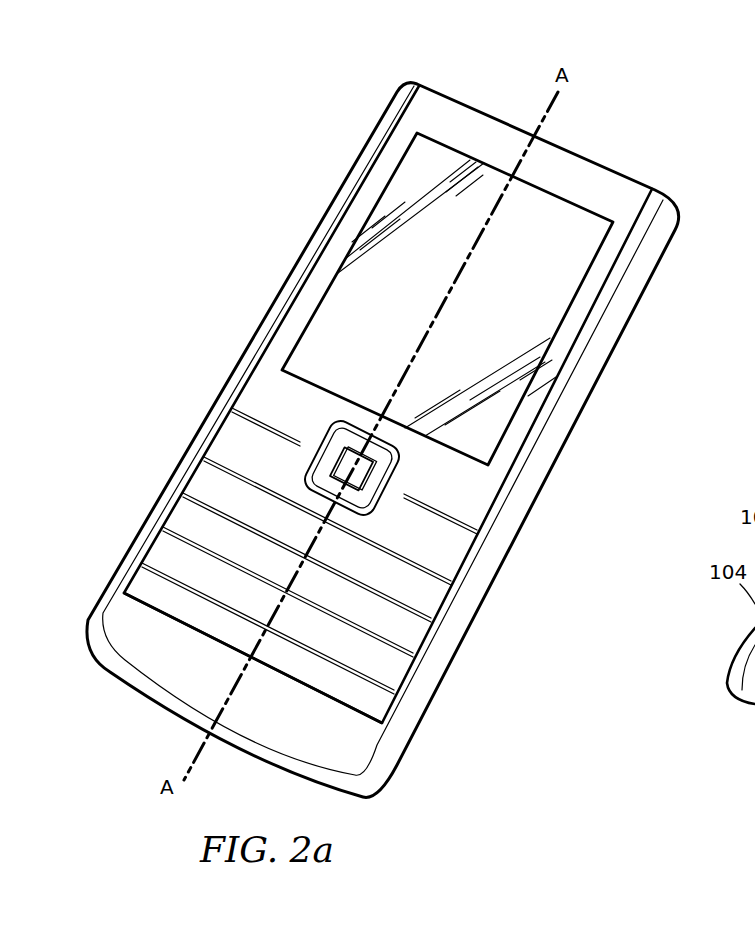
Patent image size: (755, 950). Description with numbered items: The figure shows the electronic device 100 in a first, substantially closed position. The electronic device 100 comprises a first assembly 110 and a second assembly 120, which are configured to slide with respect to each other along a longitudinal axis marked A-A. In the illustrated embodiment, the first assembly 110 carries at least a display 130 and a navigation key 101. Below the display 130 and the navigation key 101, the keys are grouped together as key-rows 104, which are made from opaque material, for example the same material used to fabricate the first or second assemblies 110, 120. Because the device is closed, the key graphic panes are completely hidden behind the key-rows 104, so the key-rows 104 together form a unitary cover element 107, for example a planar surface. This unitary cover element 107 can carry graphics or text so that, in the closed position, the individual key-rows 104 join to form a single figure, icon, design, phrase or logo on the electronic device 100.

The electronic device 100 is at (313, 102).
The navigation key 101 is at (366, 466).
The key-rows 104 is at (200, 482).
The unitary cover element 107 is at (392, 620).
The first assembly 110 is at (618, 187).
The second assembly 120 is at (676, 226).
The display 130 is at (318, 328).